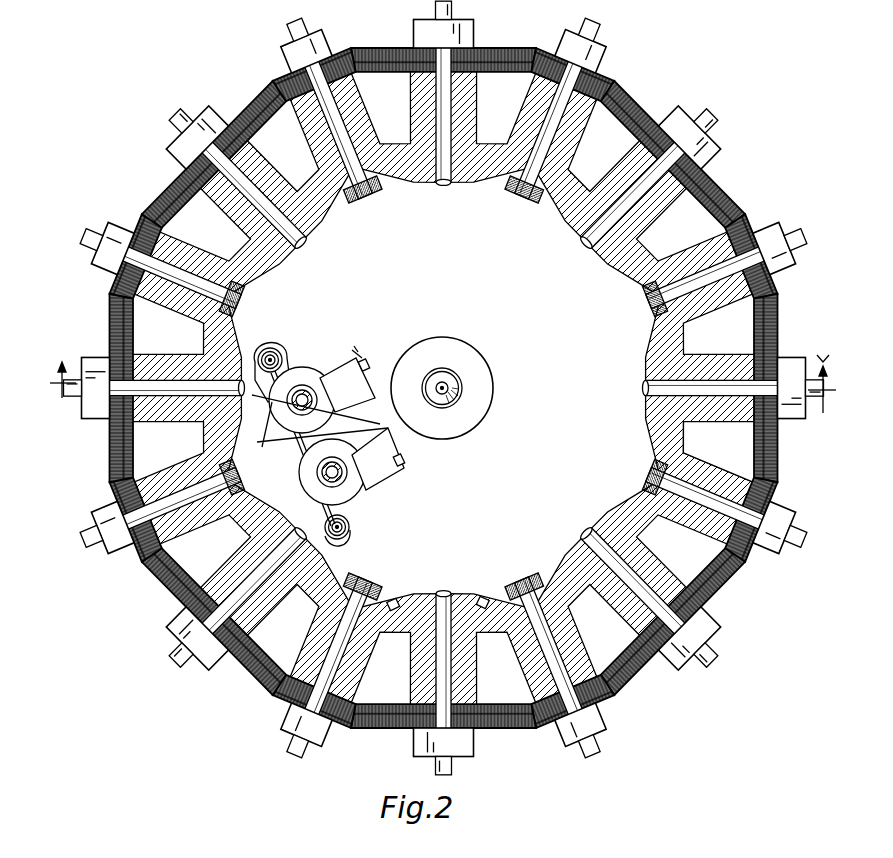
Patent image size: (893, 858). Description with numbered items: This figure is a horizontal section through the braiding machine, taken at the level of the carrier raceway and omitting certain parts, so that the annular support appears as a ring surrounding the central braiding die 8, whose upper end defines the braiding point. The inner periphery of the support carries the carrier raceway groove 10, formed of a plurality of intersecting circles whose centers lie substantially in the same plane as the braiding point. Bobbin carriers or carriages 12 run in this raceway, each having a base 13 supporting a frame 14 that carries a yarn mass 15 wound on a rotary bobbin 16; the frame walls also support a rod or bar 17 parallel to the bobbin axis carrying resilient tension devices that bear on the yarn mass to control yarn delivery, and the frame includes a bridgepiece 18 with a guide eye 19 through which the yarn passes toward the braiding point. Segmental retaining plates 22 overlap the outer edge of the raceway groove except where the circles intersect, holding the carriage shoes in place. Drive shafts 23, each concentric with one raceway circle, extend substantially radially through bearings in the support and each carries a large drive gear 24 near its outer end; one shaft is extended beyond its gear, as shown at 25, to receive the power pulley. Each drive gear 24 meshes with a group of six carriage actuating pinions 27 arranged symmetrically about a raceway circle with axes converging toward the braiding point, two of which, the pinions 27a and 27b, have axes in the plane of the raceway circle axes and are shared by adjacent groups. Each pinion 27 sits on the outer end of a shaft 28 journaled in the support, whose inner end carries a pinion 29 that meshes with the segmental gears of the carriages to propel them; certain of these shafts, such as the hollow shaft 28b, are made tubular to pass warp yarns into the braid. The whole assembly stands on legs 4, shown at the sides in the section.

The legs 4 is at (440, 395).
The braiding die 8 is at (445, 383).
The carrier raceway groove 10 is at (640, 274).
The bobbin carrier 12 is at (322, 368).
The base 13 is at (206, 408).
The frame 14 is at (270, 362).
The yarn mass 15 is at (303, 385).
The rotary bobbin 16 is at (362, 424).
The rod or bar 17 is at (277, 354).
The bridgepiece 18 is at (367, 366).
The guide eye 19 is at (358, 356).
The segmental retaining plates 22 is at (392, 604).
The drive shafts 23 is at (443, 663).
The drive gear 24 is at (490, 728).
The extended shaft end 25 is at (448, 768).
The carriage actuating pinions 27 is at (742, 556).
The carriage actuating pinion 27a is at (336, 722).
The carriage actuating pinion 27b is at (608, 696).
The shaft 28 is at (443, 388).
The hollow shaft 28b is at (782, 532).
The pinion 29 is at (362, 580).